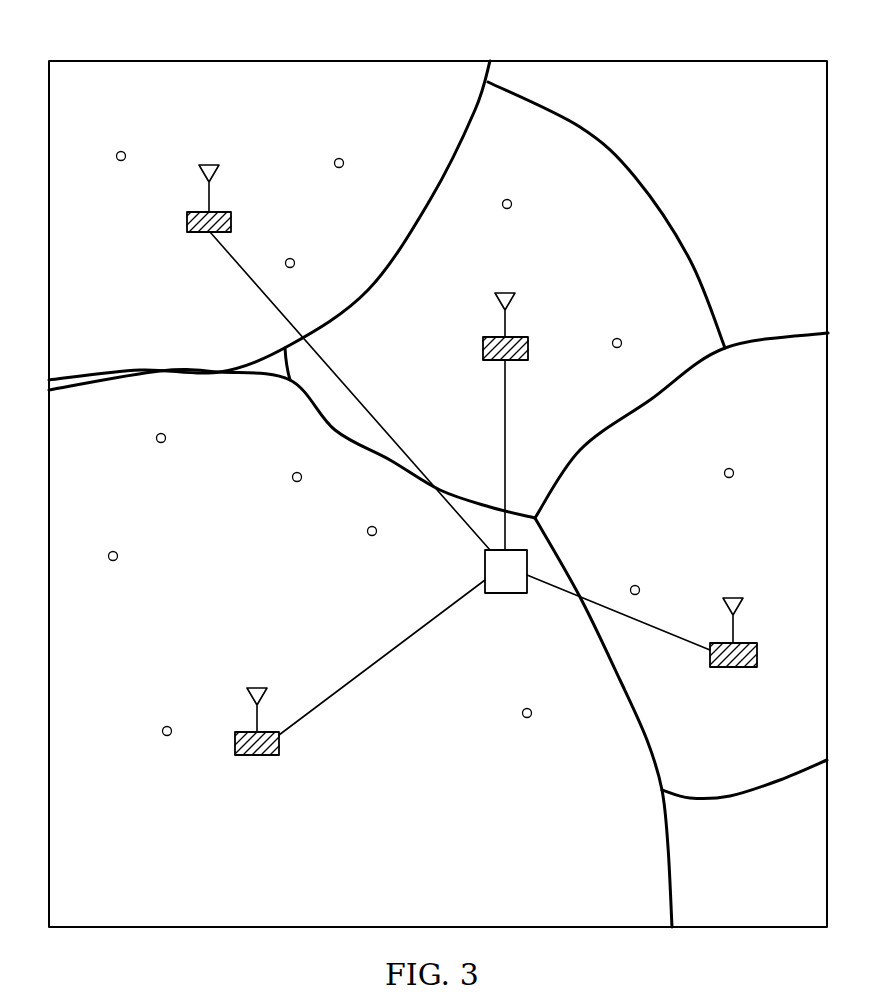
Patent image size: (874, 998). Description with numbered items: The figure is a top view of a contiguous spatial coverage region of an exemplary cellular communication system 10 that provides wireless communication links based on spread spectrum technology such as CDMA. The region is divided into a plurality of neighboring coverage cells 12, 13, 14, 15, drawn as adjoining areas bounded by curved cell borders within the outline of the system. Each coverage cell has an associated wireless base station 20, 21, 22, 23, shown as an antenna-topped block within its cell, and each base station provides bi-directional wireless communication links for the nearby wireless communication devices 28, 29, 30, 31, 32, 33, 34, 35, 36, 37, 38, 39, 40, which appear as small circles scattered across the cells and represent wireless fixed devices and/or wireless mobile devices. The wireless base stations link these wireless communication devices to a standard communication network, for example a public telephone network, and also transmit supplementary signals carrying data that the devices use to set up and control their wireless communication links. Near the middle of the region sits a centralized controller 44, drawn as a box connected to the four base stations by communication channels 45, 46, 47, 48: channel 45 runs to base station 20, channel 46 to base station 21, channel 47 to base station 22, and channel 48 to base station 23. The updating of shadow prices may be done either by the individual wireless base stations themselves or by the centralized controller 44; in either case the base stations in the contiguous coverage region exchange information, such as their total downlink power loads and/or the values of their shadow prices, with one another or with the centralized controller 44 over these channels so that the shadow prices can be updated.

The cellular communication system 10 is at (208, 58).
The coverage cell 12 is at (770, 336).
The coverage cell 13 is at (673, 862).
The coverage cell 14 is at (635, 177).
The coverage cell 15 is at (379, 293).
The wireless base station 20 is at (745, 667).
The wireless base station 21 is at (248, 755).
The wireless base station 22 is at (528, 348).
The wireless base station 23 is at (187, 223).
The wireless communication device 28 is at (729, 468).
The wireless communication device 29 is at (635, 585).
The wireless communication device 30 is at (527, 718).
The wireless communication device 31 is at (167, 736).
The wireless communication device 32 is at (113, 561).
The wireless communication device 33 is at (156, 438).
The wireless communication device 34 is at (296, 472).
The wireless communication device 35 is at (372, 536).
The wireless communication device 36 is at (617, 338).
The wireless communication device 37 is at (507, 199).
The wireless communication device 38 is at (339, 158).
The wireless communication device 39 is at (290, 258).
The wireless communication device 40 is at (121, 151).
The centralized controller 44 is at (499, 593).
The communication channel 45 is at (677, 637).
The communication channel 46 is at (382, 660).
The communication channel 47 is at (507, 455).
The communication channel 48 is at (245, 289).